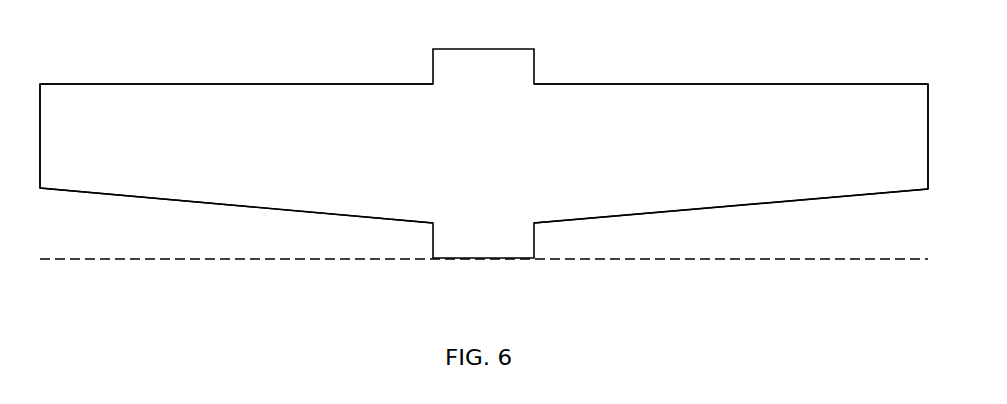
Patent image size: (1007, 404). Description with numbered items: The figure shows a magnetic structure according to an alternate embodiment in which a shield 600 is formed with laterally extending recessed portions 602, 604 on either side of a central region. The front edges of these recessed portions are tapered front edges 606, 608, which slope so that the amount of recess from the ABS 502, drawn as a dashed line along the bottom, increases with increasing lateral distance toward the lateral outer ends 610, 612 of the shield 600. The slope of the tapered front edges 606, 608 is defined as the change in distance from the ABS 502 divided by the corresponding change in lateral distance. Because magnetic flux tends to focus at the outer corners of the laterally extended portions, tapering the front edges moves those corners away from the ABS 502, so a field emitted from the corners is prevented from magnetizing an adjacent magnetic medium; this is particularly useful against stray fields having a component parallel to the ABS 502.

The shield 600 is at (693, 80).
The ABS 502 is at (712, 260).
The laterally extending recessed portion 602 is at (728, 147).
The laterally extending recessed portion 604 is at (230, 148).
The tapered front edge 606 is at (717, 208).
The tapered front edge 608 is at (175, 198).
The lateral outer end 610 is at (928, 145).
The lateral outer end 612 is at (40, 145).